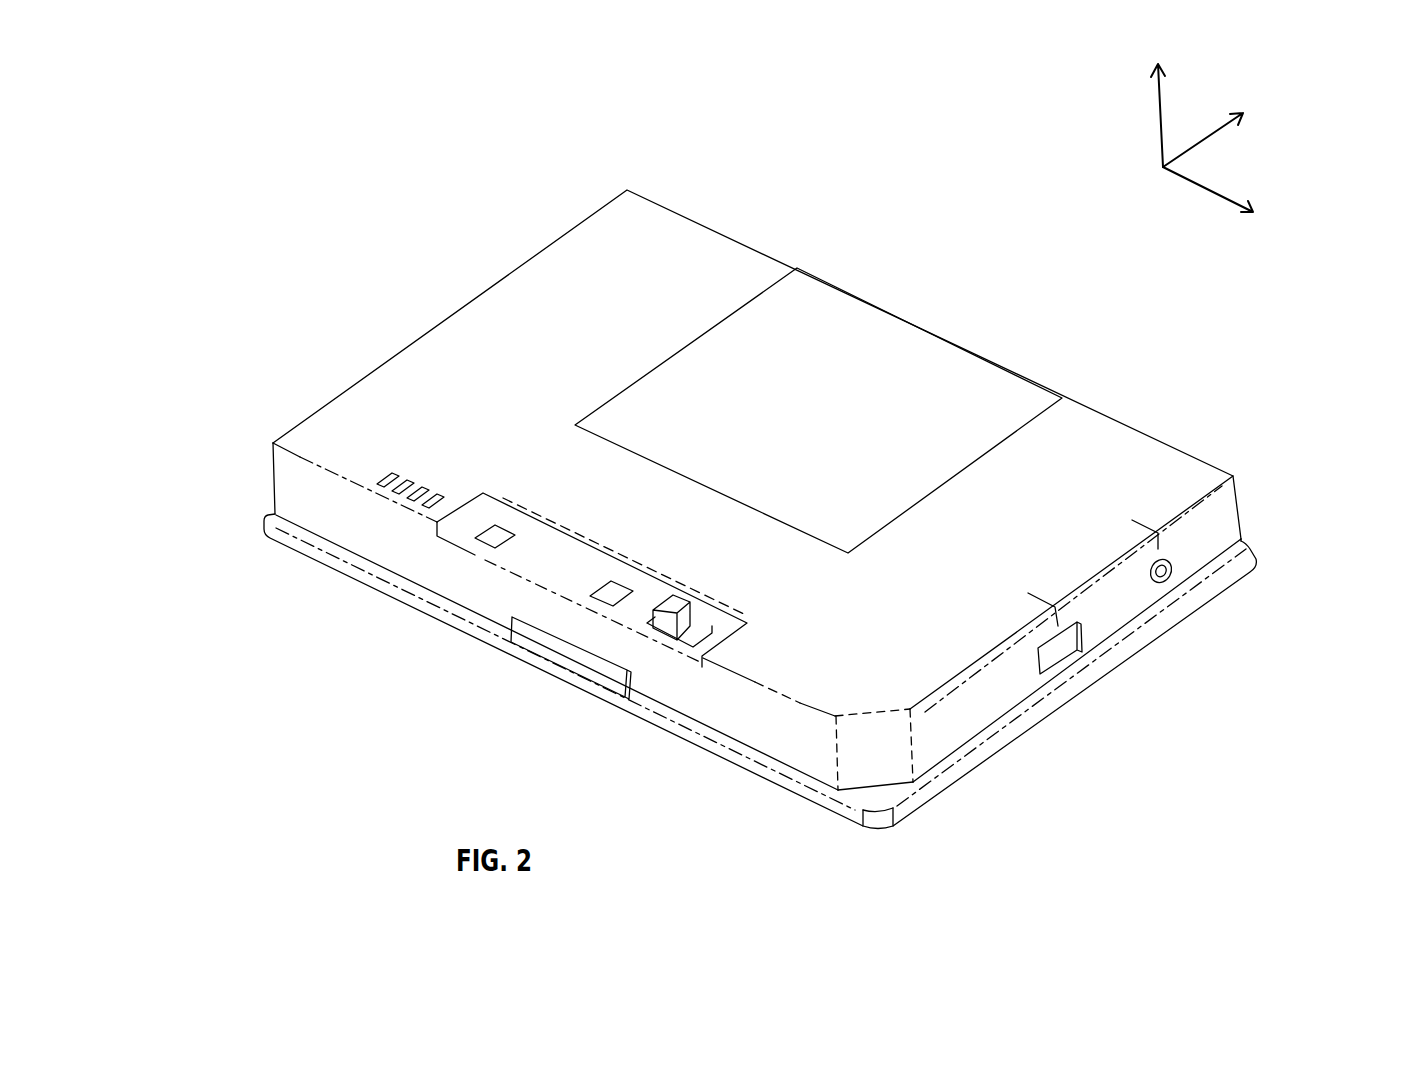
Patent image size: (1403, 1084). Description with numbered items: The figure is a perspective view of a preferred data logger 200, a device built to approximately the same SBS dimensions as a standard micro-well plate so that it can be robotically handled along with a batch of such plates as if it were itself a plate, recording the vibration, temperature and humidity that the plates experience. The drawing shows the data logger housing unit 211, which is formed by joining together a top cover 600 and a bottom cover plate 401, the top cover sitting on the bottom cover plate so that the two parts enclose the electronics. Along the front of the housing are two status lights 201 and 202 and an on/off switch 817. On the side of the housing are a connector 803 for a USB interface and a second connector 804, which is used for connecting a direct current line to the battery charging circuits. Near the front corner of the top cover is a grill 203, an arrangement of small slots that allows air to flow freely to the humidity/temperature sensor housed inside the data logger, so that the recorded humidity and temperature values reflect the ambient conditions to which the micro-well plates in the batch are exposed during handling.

The data logger 200 is at (929, 128).
The top cover 600 is at (1221, 466).
The data logger housing unit 211 is at (1269, 522).
The bottom cover plate 401 is at (895, 810).
The grill 203 is at (396, 513).
The status light 201 is at (488, 538).
The status light 202 is at (603, 598).
The on/off switch 817 is at (677, 626).
The connector 803 is at (1078, 651).
The second connector 804 is at (1172, 578).